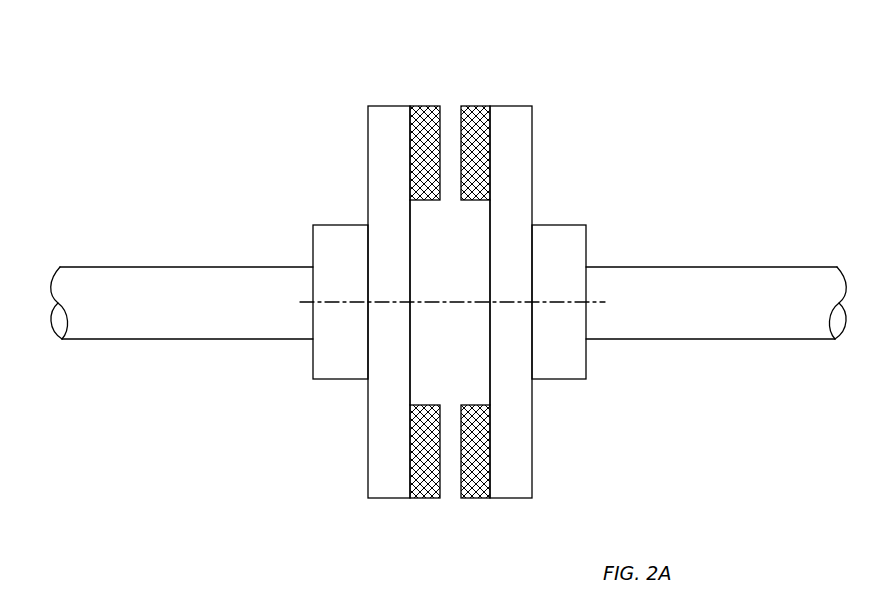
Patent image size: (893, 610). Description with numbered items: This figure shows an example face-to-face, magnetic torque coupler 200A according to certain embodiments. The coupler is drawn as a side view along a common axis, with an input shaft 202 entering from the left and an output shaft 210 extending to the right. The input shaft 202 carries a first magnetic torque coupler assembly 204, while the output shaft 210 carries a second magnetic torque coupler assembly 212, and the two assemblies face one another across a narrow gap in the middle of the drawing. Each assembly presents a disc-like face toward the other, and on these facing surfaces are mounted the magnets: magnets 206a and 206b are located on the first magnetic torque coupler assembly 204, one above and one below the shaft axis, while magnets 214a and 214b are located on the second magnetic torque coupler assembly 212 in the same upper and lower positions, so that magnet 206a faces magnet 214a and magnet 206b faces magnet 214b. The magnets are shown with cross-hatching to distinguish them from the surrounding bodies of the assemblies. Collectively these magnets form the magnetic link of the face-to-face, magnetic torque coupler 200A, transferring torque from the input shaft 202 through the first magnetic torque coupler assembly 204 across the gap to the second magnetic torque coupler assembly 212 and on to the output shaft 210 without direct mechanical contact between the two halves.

The face-to-face, magnetic torque coupler 200A is at (178, 106).
The input shaft 202 is at (89, 267).
The first magnetic torque coupler assembly 204 is at (312, 250).
The magnet 206a is at (425, 115).
The magnet 206b is at (429, 478).
The output shaft 210 is at (720, 283).
The second magnetic torque coupler assembly 212 is at (586, 226).
The magnet 214a is at (478, 112).
The magnet 214b is at (476, 490).